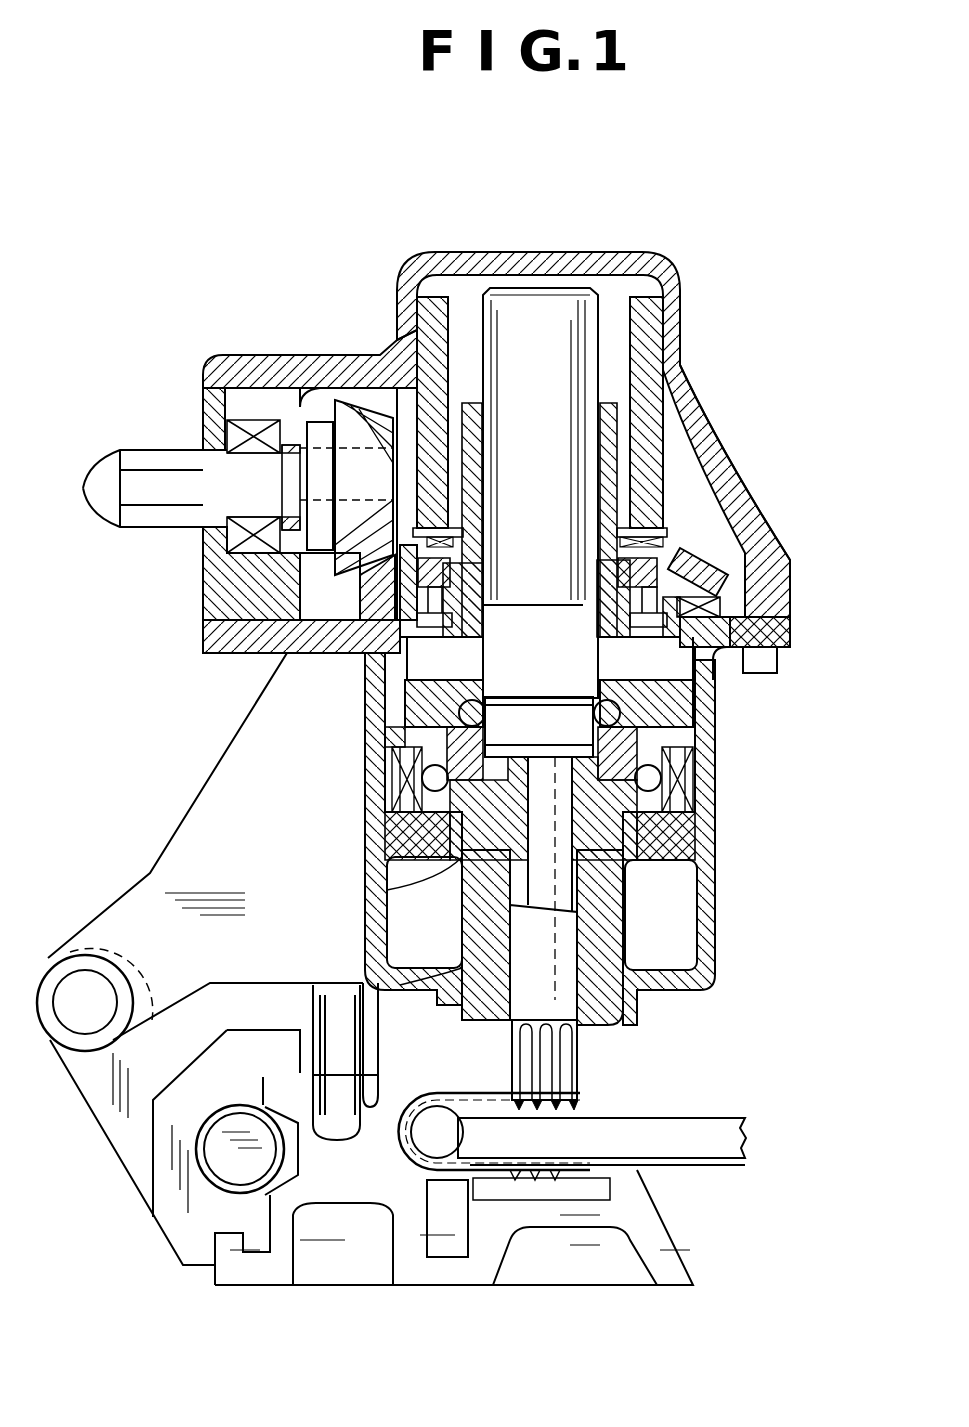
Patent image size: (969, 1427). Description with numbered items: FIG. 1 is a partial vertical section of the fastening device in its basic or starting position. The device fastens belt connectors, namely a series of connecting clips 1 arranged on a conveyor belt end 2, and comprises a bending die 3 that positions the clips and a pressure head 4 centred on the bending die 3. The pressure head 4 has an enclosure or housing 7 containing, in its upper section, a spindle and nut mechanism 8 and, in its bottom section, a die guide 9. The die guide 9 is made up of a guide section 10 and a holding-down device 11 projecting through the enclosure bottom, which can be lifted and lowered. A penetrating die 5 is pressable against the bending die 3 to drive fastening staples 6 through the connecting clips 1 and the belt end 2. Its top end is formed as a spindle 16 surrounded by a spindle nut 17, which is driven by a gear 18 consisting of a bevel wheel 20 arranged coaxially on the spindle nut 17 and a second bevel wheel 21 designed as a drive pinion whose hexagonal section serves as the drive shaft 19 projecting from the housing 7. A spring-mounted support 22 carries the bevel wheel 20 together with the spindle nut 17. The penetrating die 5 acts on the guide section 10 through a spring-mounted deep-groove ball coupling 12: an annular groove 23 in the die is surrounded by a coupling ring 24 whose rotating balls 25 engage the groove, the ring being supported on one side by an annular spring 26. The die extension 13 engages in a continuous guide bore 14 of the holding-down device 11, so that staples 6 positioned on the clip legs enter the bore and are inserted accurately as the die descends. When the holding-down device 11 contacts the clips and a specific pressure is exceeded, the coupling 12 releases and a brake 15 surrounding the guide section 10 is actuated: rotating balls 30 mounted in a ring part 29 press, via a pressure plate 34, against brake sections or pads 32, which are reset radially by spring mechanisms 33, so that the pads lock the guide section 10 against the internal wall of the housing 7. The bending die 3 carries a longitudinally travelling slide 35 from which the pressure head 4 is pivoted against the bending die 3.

The connecting clips 1 is at (452, 1096).
The conveyor belt end 2 is at (673, 1153).
The bending die 3 is at (423, 1290).
The pressure head 4 is at (213, 283).
The penetrating die 5 is at (553, 647).
The fastening staples 6 is at (578, 1064).
The enclosure 7 is at (690, 400).
The spindle and nut mechanism 8 is at (610, 300).
The die guide 9 is at (383, 825).
The guide section 10 is at (715, 683).
The holding-down device 11 is at (612, 1005).
The deep-groove ball coupling 12 is at (657, 705).
The die extension 13 is at (567, 890).
The guide bore 14 is at (520, 950).
The brake 15 is at (358, 737).
The spindle 16 is at (508, 310).
The spindle nut 17 is at (470, 400).
The gear 18 is at (342, 580).
The drive shaft 19 is at (155, 462).
The bevel wheel 20 is at (705, 560).
The bevel wheel 21 is at (350, 420).
The spring-mounted support 22 is at (681, 524).
The annular groove 23 is at (510, 705).
The coupling ring 24 is at (457, 713).
The rotating balls 25 is at (402, 690).
The annular spring 26 is at (465, 920).
The ring part 29 is at (640, 805).
The rotating balls 30 is at (655, 782).
The brake sections 32 is at (695, 765).
The spring mechanisms 33 is at (392, 770).
The pressure plate 34 is at (662, 758).
The slide 35 is at (133, 1133).